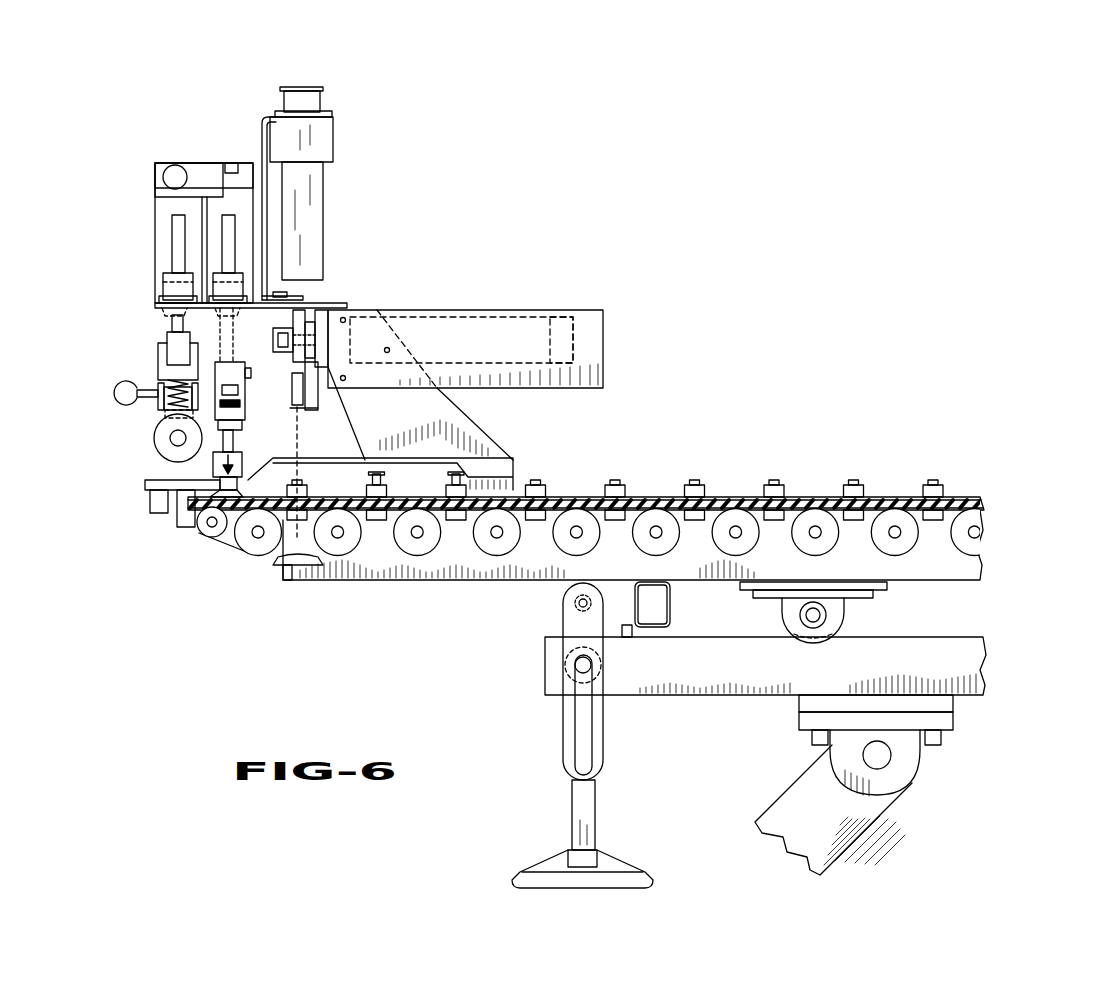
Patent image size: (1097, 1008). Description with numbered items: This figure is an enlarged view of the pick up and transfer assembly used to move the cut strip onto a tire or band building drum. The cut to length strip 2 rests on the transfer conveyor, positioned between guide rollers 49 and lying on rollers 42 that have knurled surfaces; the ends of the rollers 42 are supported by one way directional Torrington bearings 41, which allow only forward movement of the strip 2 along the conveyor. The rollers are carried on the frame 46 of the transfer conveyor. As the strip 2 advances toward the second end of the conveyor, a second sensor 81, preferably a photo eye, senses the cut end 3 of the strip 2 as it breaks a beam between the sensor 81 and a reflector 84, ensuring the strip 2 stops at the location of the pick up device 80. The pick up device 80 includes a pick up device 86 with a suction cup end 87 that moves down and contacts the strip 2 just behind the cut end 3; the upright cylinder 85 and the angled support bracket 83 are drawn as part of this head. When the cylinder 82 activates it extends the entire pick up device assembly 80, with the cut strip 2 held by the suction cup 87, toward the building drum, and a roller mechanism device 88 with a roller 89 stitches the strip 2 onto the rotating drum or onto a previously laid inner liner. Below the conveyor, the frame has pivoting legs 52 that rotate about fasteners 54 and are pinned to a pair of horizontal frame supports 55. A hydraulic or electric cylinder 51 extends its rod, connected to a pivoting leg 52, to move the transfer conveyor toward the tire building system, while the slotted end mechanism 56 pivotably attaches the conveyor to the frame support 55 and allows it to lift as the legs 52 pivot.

The pick up device 80 is at (200, 132).
The pneumatic cylinder 85 is at (323, 192).
The cylinder 82 is at (527, 318).
The support bracket 83 is at (483, 427).
The second sensor 81 is at (300, 385).
The pick up device 86 is at (232, 370).
The suction cup end 87 is at (224, 493).
The roller mechanism device 88 is at (168, 368).
The roller 89 is at (154, 438).
The guide rollers 49 is at (157, 503).
The cut end 3 is at (187, 500).
The strip 2 is at (737, 488).
The frame 46 is at (448, 581).
The one way directional Torrington bearings 41 is at (900, 553).
The rollers 42 is at (616, 532).
The reflector 84 is at (297, 566).
The cylinder 51 is at (800, 615).
The horizontal frame supports 55 is at (703, 697).
The slotted end mechanism 56 is at (568, 737).
The fasteners 54 is at (888, 764).
The pivoting legs 52 is at (857, 831).